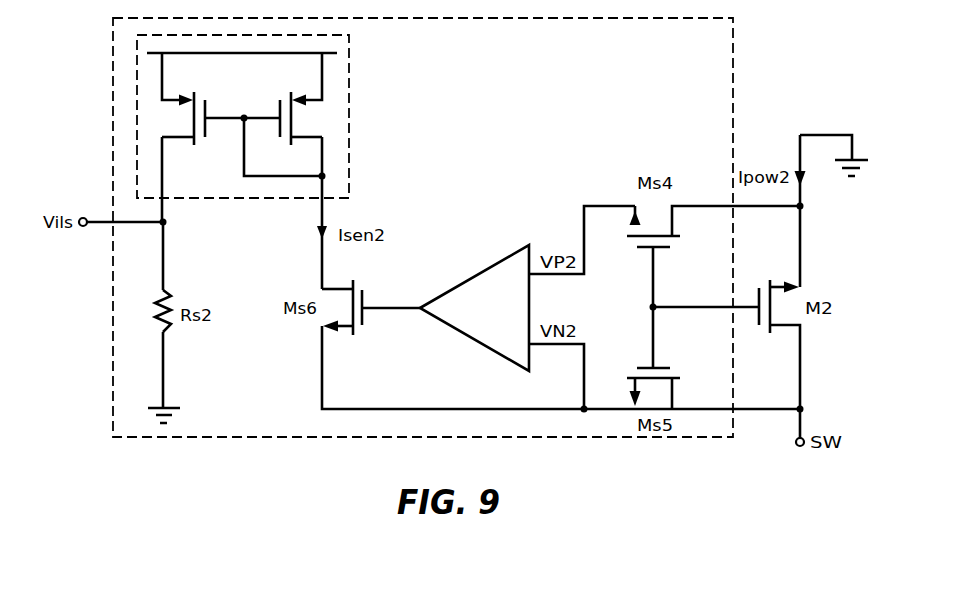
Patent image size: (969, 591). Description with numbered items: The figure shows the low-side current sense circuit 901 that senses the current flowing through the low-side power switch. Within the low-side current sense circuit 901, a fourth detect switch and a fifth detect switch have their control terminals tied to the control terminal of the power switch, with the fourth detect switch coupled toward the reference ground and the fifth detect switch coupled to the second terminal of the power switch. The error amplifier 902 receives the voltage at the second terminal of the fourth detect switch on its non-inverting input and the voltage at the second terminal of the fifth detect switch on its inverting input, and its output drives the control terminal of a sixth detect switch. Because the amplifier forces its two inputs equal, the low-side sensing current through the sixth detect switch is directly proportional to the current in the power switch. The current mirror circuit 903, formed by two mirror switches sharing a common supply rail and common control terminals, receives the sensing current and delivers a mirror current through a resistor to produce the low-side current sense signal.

The low-side current sense circuit 901 is at (112, 118).
The error amplifier 902 is at (472, 274).
The current mirror circuit 903 is at (349, 117).